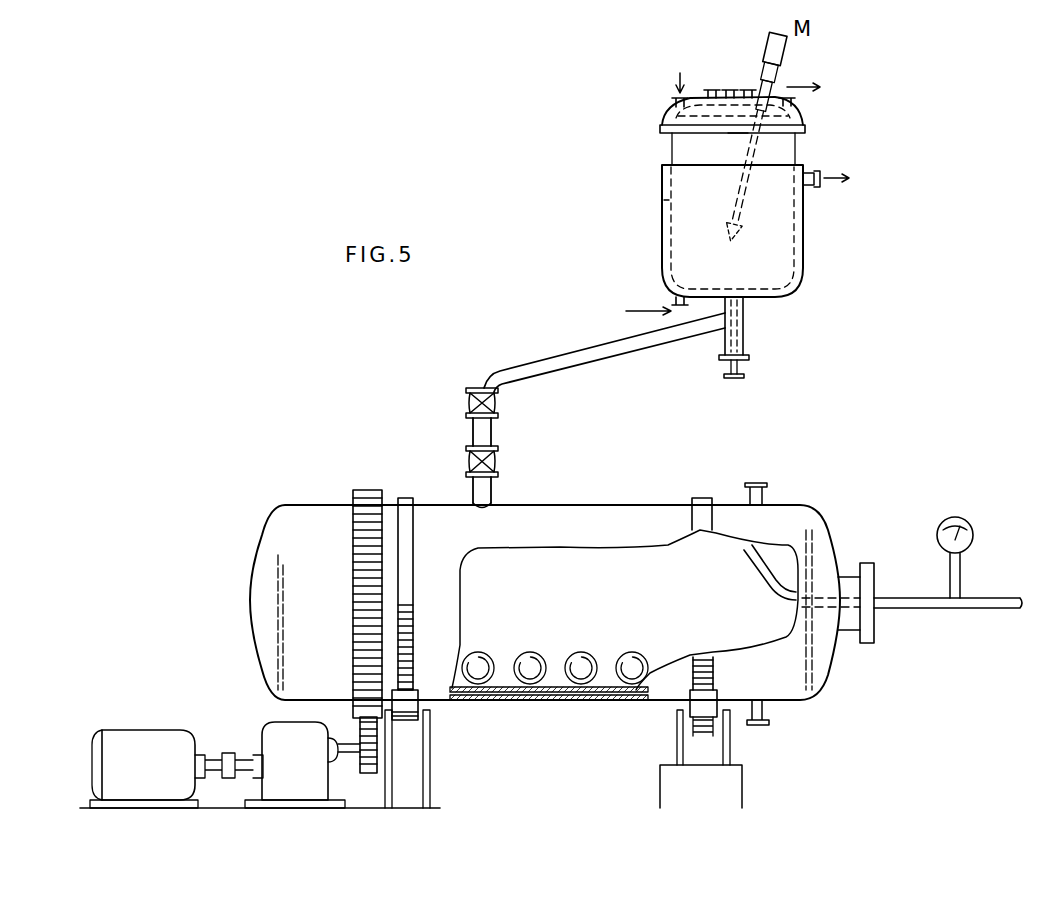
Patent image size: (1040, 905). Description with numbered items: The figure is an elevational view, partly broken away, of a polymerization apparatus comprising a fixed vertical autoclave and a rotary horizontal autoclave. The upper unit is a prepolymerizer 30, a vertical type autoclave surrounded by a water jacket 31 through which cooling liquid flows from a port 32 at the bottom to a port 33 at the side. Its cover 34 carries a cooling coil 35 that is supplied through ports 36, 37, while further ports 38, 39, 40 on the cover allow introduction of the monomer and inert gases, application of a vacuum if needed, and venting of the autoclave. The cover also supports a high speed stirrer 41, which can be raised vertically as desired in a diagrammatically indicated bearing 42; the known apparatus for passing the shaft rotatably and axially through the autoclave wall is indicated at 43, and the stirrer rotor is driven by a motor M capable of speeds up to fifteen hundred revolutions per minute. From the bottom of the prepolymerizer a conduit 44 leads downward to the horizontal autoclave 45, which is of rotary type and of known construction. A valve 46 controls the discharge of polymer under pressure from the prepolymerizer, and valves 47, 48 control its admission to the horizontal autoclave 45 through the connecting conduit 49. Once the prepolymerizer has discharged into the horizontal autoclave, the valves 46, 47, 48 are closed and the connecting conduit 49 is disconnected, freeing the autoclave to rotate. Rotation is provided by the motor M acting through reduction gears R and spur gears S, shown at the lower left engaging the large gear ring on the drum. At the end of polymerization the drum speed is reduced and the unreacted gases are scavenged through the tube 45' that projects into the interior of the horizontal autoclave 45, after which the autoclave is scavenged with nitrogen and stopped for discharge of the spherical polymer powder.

The prepolymerizer 30 is at (806, 236).
The water jacket 31 is at (666, 214).
The port 32 is at (672, 300).
The port 33 is at (814, 172).
The cover 34 is at (672, 120).
The cooling coil 35 is at (736, 133).
The port 36 is at (672, 99).
The port 37 is at (795, 99).
The port 38 is at (708, 90).
The port 39 is at (729, 90).
The port 40 is at (748, 90).
The high speed stirrer 41 is at (740, 246).
The bearing 42 is at (772, 95).
The shaft passing apparatus 43 is at (779, 80).
The conduit 44 is at (608, 350).
The horizontal autoclave 45 is at (636, 617).
The tube 45' is at (757, 577).
The valve 46 is at (743, 366).
The valve 47 is at (468, 401).
The valve 48 is at (468, 462).
The connecting conduit 49 is at (472, 433).
The motor M is at (135, 745).
The reduction gears R is at (275, 742).
The spur gears S is at (366, 754).